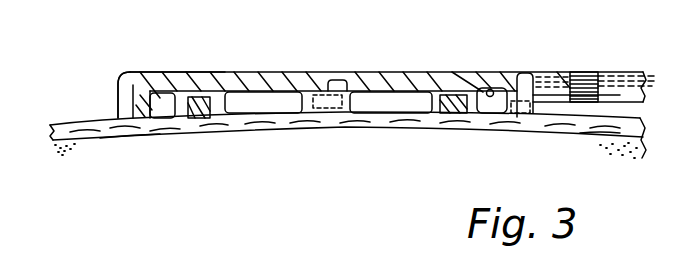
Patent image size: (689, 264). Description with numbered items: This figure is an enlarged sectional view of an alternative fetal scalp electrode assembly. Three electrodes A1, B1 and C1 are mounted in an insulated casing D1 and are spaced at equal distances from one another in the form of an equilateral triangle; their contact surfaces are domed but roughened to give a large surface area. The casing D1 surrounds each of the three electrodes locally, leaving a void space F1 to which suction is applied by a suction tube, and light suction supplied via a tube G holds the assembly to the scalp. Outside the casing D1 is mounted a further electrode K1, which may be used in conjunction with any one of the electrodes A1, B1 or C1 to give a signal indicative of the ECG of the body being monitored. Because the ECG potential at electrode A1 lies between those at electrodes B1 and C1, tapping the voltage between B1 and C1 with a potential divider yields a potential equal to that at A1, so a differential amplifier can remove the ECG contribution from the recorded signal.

The insulated casing D1 is at (126, 80).
The electrode A1 is at (200, 113).
The void space F1 is at (282, 98).
The electrode B1 is at (328, 108).
The electrode C1 is at (458, 113).
The tube G is at (560, 92).
The further electrode K1 is at (522, 118).